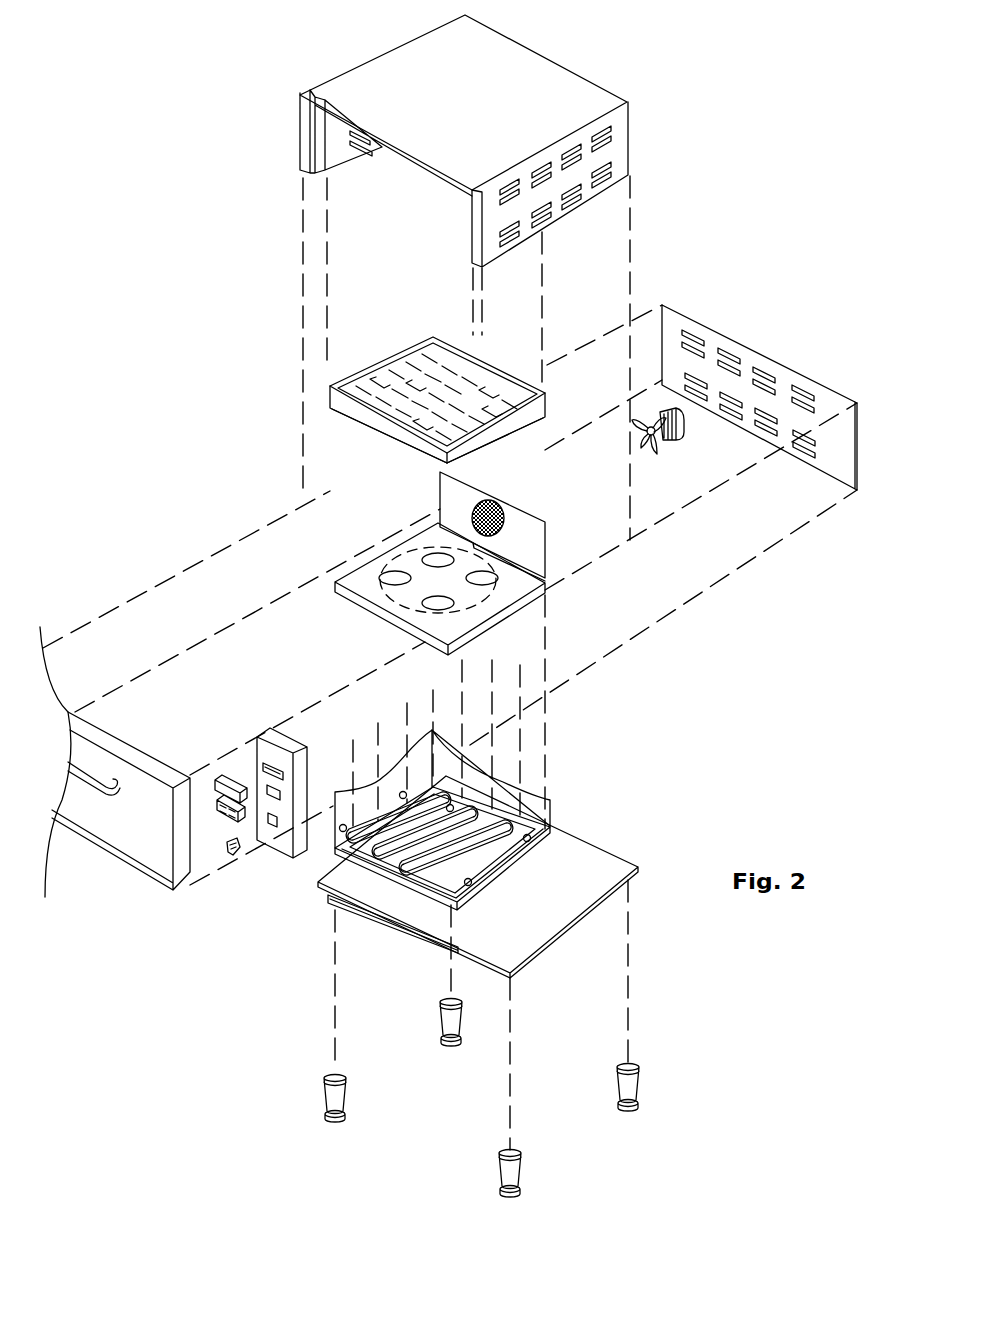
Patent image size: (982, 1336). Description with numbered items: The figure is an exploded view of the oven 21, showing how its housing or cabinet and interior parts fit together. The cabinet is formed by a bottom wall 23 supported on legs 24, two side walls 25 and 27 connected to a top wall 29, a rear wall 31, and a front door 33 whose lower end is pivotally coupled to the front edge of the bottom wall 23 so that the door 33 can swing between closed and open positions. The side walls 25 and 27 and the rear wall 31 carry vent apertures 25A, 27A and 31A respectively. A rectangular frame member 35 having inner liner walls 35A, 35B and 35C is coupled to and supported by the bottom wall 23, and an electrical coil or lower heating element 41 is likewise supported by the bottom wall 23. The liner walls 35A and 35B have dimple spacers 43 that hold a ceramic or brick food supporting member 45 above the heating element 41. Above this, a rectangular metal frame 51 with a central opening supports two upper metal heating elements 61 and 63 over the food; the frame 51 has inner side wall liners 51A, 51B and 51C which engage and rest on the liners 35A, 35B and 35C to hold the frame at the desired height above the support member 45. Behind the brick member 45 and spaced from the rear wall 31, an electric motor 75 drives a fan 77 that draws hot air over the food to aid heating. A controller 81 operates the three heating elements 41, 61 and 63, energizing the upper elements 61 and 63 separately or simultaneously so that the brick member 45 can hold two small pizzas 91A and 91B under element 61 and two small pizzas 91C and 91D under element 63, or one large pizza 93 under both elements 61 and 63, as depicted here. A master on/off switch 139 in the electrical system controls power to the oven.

The oven 21 is at (799, 152).
The bottom wall 23 is at (507, 513).
The legs 24 is at (637, 1082).
The side wall 25 is at (613, 147).
The vent apertures 25A is at (607, 182).
The side wall 27 is at (300, 123).
The vent apertures 27A is at (352, 138).
The top wall 29 is at (570, 93).
The rear wall 31 is at (708, 328).
The vent apertures 31A is at (735, 358).
The front door 33 is at (167, 840).
The rectangular frame member 35 is at (373, 883).
The inner liner wall 35A is at (412, 893).
The inner liner wall 35B is at (430, 736).
The inner liner wall 35C is at (540, 790).
The heating element 41 is at (530, 835).
The dimple spacers 43 is at (470, 882).
The food supporting member 45 is at (373, 565).
The rectangular metal frame 51 is at (410, 386).
The inner side wall liner 51A is at (445, 477).
The inner side wall liner 51B is at (330, 397).
The inner side wall liner 51C is at (383, 395).
The heating element 61 is at (445, 459).
The heating element 63 is at (345, 382).
The electric motor 75 is at (678, 425).
The fan 77 is at (665, 450).
The controller 81 is at (245, 800).
The small pizza 91A is at (463, 610).
The small pizza 91B is at (490, 577).
The small pizza 91C is at (382, 578).
The small pizza 91D is at (438, 548).
The large pizza 93 is at (407, 607).
The master on/off switch 139 is at (232, 858).